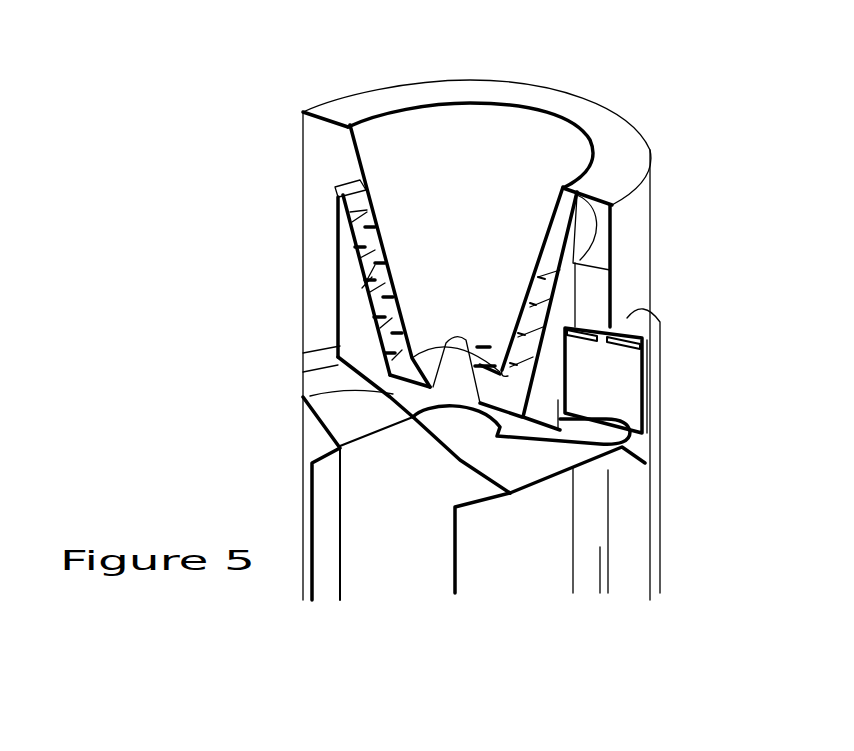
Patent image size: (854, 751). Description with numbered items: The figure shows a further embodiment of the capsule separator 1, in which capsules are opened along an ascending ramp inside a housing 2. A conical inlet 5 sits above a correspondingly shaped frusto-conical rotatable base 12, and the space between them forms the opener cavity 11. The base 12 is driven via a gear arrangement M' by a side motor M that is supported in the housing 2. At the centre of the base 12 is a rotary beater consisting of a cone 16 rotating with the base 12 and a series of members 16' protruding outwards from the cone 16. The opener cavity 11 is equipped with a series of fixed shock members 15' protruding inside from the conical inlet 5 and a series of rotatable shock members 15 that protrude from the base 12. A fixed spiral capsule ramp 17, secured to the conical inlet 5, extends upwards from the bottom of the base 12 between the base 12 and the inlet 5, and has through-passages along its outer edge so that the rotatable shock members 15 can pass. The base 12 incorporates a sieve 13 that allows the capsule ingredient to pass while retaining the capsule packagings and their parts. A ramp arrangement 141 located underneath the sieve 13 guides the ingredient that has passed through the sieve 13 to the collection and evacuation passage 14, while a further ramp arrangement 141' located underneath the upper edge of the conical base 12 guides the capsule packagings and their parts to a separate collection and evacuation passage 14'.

The coin receiving device 1 is at (250, 153).
The housing 2 is at (638, 157).
The conical inlet 5 is at (452, 128).
The opener cavity 11 is at (352, 296).
The rotatable base 12 is at (338, 376).
The sieve 13 is at (380, 332).
The collection and evacuation passage 14 is at (590, 495).
The lower housing part 14' is at (294, 498).
The rotatable shock members 15 is at (318, 270).
The fixed shock members 15' is at (406, 260).
The cone 16 is at (450, 318).
The members 16' is at (487, 323).
The fixed spiral capsule ramp 17 is at (372, 277).
The ramp arrangement 141 is at (492, 486).
The further ramp arrangement 141' is at (358, 445).
The side motor M is at (602, 380).
The gear arrangement M' is at (657, 421).